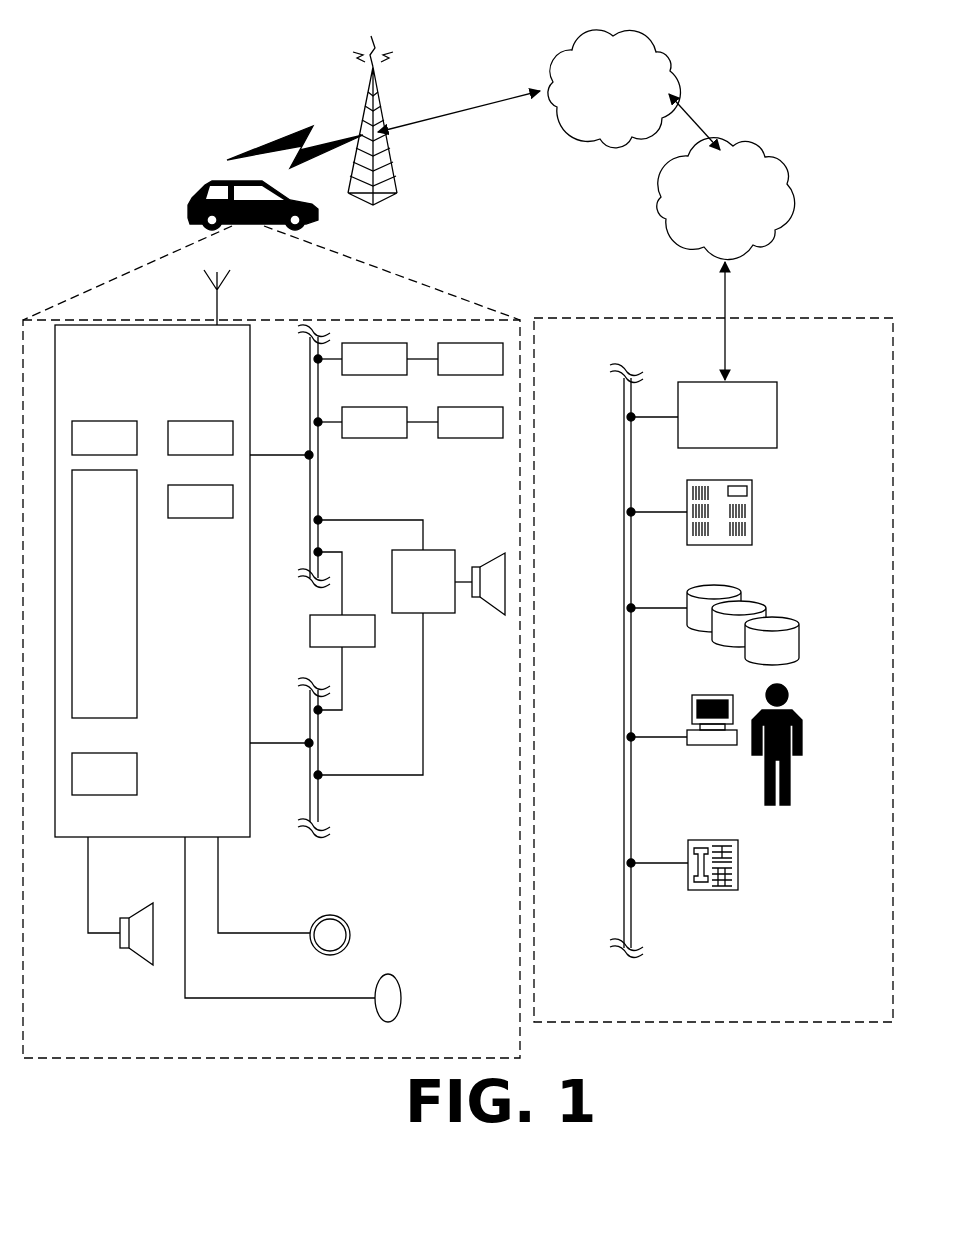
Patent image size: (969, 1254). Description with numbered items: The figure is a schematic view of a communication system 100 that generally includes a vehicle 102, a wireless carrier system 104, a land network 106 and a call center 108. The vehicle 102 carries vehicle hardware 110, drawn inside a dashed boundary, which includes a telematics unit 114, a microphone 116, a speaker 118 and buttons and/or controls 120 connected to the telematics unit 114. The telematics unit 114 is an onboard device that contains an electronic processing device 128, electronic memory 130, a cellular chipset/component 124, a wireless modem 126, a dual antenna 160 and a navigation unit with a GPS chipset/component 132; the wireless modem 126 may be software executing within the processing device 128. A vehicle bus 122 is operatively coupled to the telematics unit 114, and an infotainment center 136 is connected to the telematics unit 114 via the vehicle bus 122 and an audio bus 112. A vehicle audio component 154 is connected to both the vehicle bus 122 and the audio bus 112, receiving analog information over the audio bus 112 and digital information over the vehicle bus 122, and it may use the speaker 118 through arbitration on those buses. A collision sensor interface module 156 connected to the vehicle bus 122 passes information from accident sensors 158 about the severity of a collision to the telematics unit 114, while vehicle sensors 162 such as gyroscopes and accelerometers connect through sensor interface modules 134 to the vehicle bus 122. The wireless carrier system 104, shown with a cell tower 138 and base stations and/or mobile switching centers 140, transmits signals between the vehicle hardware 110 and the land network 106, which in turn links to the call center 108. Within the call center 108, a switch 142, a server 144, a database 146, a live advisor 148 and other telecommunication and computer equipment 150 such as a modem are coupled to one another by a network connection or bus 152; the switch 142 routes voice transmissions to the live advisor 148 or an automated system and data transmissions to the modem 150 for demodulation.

The communication system 100 is at (138, 34).
The vehicle 102 is at (197, 194).
The wireless carrier system 104 is at (500, 125).
The land network 106 is at (726, 199).
The call center 108 is at (727, 1025).
The vehicle hardware 110 is at (213, 1062).
The audio bus 112 is at (310, 800).
The telematics unit 114 is at (190, 581).
The microphone 116 is at (392, 975).
The speaker 118 is at (133, 957).
The buttons and/or controls 120 is at (325, 915).
The vehicle bus 122 is at (318, 504).
The cellular chipset/component 124 is at (104, 438).
The wireless modem 126 is at (200, 438).
The electronic processing device 128 is at (104, 594).
The electronic memory 130 is at (104, 774).
The GPS chipset/component 132 is at (200, 501).
The sensor interface modules 134 is at (374, 422).
The infotainment center 136 is at (342, 631).
The cell tower 138 is at (395, 87).
The base stations and/or mobile switching centers 140 is at (614, 89).
The switch 142 is at (727, 415).
The server 144 is at (752, 505).
The database 146 is at (800, 625).
The live advisor 148 is at (795, 712).
The telecommunication and computer equipment 150 is at (738, 860).
The network connection or bus 152 is at (623, 670).
The vehicle audio component 154 is at (448, 582).
The collision sensor interface module 156 is at (374, 359).
The accident sensors 158 is at (470, 359).
The dual antenna 160 is at (215, 322).
The vehicle sensors 162 is at (470, 422).